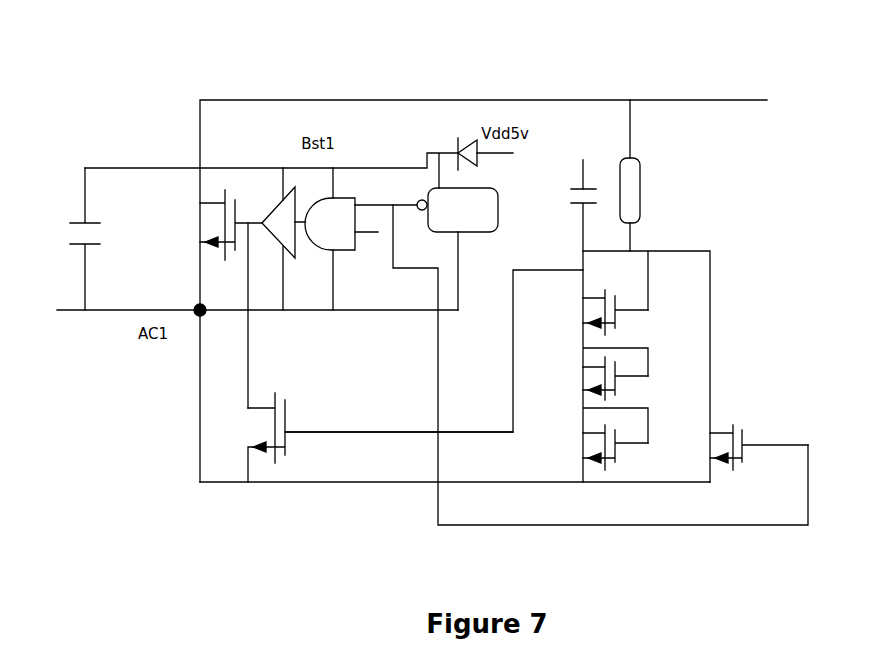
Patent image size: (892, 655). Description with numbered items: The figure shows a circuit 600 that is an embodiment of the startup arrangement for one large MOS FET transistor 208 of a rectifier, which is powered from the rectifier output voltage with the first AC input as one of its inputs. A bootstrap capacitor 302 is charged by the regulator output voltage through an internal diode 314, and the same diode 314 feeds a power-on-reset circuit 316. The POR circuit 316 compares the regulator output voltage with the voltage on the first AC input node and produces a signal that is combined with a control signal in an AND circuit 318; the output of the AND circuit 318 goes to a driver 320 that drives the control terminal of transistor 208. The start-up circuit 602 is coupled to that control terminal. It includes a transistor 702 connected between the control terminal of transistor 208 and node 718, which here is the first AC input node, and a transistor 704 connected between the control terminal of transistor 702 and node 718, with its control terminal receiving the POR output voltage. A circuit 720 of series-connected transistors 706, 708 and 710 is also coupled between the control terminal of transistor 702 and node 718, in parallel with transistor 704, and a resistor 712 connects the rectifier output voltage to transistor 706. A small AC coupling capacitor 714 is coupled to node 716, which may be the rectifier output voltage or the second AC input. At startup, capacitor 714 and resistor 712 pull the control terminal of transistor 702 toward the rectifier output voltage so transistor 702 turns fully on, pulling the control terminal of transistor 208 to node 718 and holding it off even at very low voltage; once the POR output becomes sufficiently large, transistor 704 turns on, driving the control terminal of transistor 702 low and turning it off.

The power receiver circuit 600 is at (113, 90).
The transistor 208 is at (208, 222).
The capacitor Cbst 302 is at (70, 233).
The internal diode 314 is at (461, 146).
The power-on-reset circuit 316 is at (486, 218).
The AND gate 318 is at (338, 233).
The driver 320 is at (296, 244).
The start-up circuit 602 is at (580, 366).
The transistor 702 is at (280, 395).
The transistor 704 is at (733, 424).
The transistor 706 is at (620, 296).
The transistor 708 is at (598, 370).
The transistor 710 is at (580, 447).
The resistor R1 712 is at (654, 175).
The capacitor C1 714 is at (574, 196).
The node 716 is at (590, 143).
The node 718 is at (198, 480).
The circuit 720 is at (562, 345).